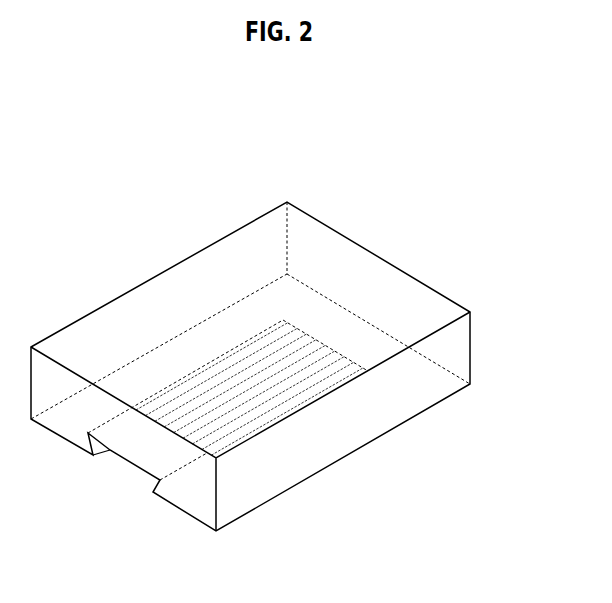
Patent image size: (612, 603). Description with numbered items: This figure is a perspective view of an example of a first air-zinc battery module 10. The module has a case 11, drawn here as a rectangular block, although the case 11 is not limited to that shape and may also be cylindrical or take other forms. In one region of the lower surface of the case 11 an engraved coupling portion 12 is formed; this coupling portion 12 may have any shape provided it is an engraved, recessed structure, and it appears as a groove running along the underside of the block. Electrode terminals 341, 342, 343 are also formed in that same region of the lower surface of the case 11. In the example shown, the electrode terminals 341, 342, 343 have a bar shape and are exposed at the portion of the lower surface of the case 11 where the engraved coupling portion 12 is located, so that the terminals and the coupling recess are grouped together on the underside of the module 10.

The first air-zinc battery module 10 is at (457, 106).
The case 11 is at (472, 350).
The engraved coupling portion 12 is at (126, 464).
The electrode terminal 341 is at (297, 332).
The electrode terminal 342 is at (323, 342).
The electrode terminal 343 is at (343, 353).